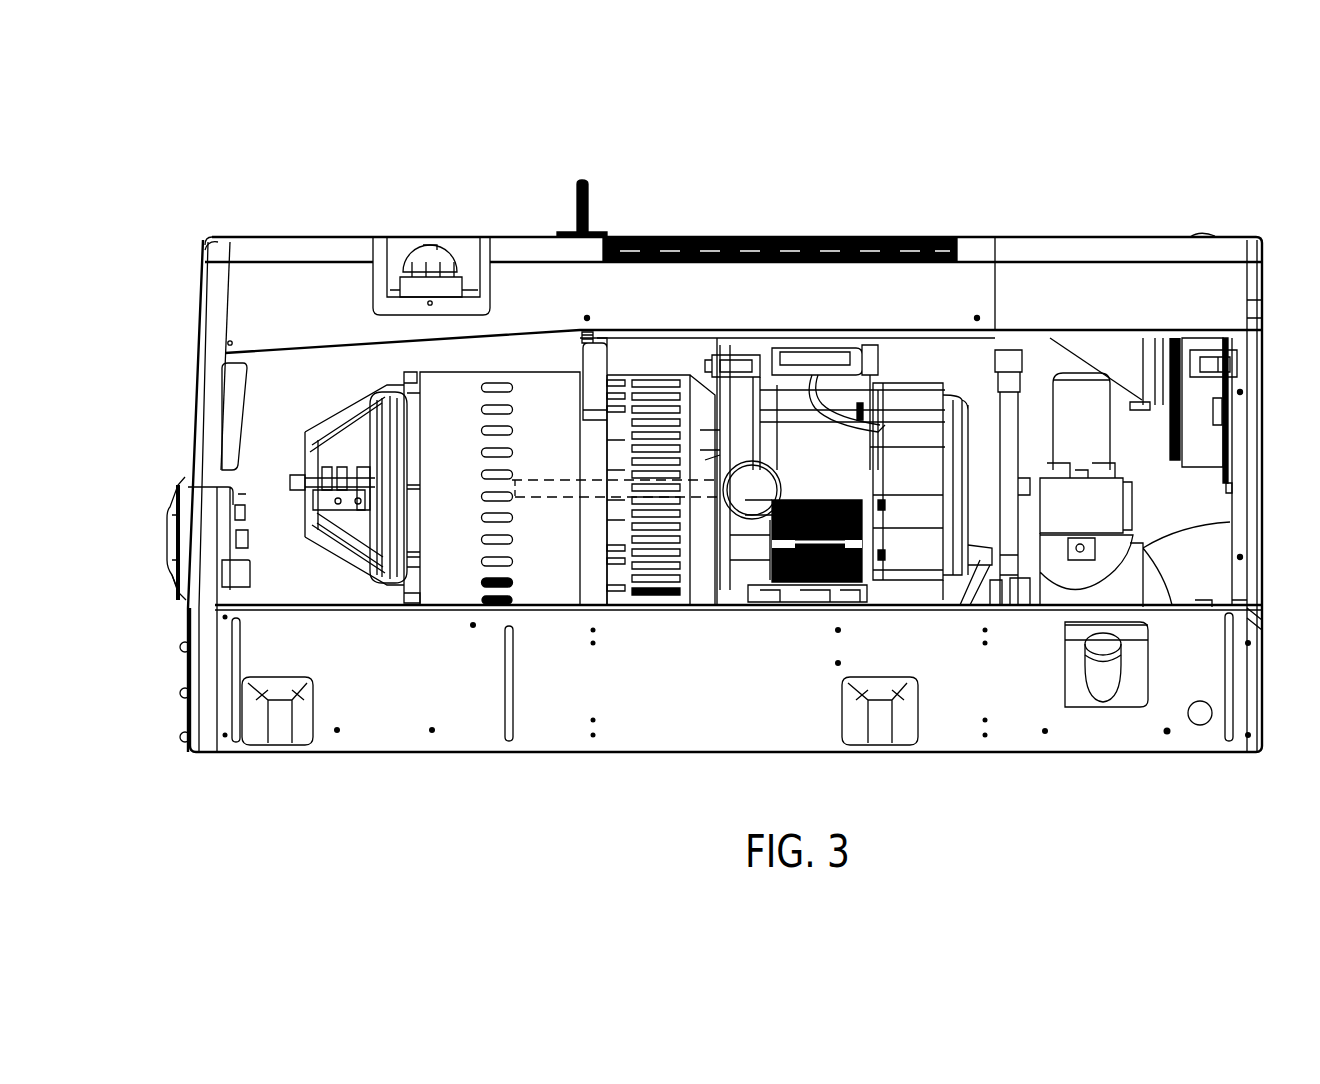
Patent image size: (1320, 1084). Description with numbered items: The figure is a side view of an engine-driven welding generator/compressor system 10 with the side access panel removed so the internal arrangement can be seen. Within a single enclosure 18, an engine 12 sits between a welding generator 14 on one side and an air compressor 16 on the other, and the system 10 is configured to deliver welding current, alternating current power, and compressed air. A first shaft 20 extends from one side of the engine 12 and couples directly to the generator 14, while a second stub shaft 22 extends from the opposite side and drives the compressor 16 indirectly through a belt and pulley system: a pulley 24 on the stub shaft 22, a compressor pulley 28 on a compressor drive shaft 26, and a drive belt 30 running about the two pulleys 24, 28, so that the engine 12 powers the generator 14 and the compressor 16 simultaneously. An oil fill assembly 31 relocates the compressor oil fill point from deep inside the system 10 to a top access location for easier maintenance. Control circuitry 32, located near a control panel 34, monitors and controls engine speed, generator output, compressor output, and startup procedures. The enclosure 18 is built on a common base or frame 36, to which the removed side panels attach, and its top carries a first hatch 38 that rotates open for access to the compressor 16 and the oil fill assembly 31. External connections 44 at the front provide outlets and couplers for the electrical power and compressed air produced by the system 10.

The welding generator/compressor system 10 is at (1122, 188).
The engine 12 is at (906, 355).
The welding generator 14 is at (538, 390).
The air compressor 16 is at (1230, 522).
The enclosure 18 is at (347, 214).
The first shaft 20 is at (545, 497).
The second shaft 22 is at (1030, 490).
The pulley 24 is at (1020, 470).
The compressor drive shaft 26 is at (1025, 583).
The compressor pulley 28 is at (990, 580).
The drive belt 30 is at (992, 552).
The oil fill assembly 31 is at (1024, 375).
The control circuitry 32 is at (262, 387).
The control panel 34 is at (198, 285).
The frame 36 is at (367, 608).
The first hatch 38 is at (1047, 330).
The external connections 44 is at (160, 533).